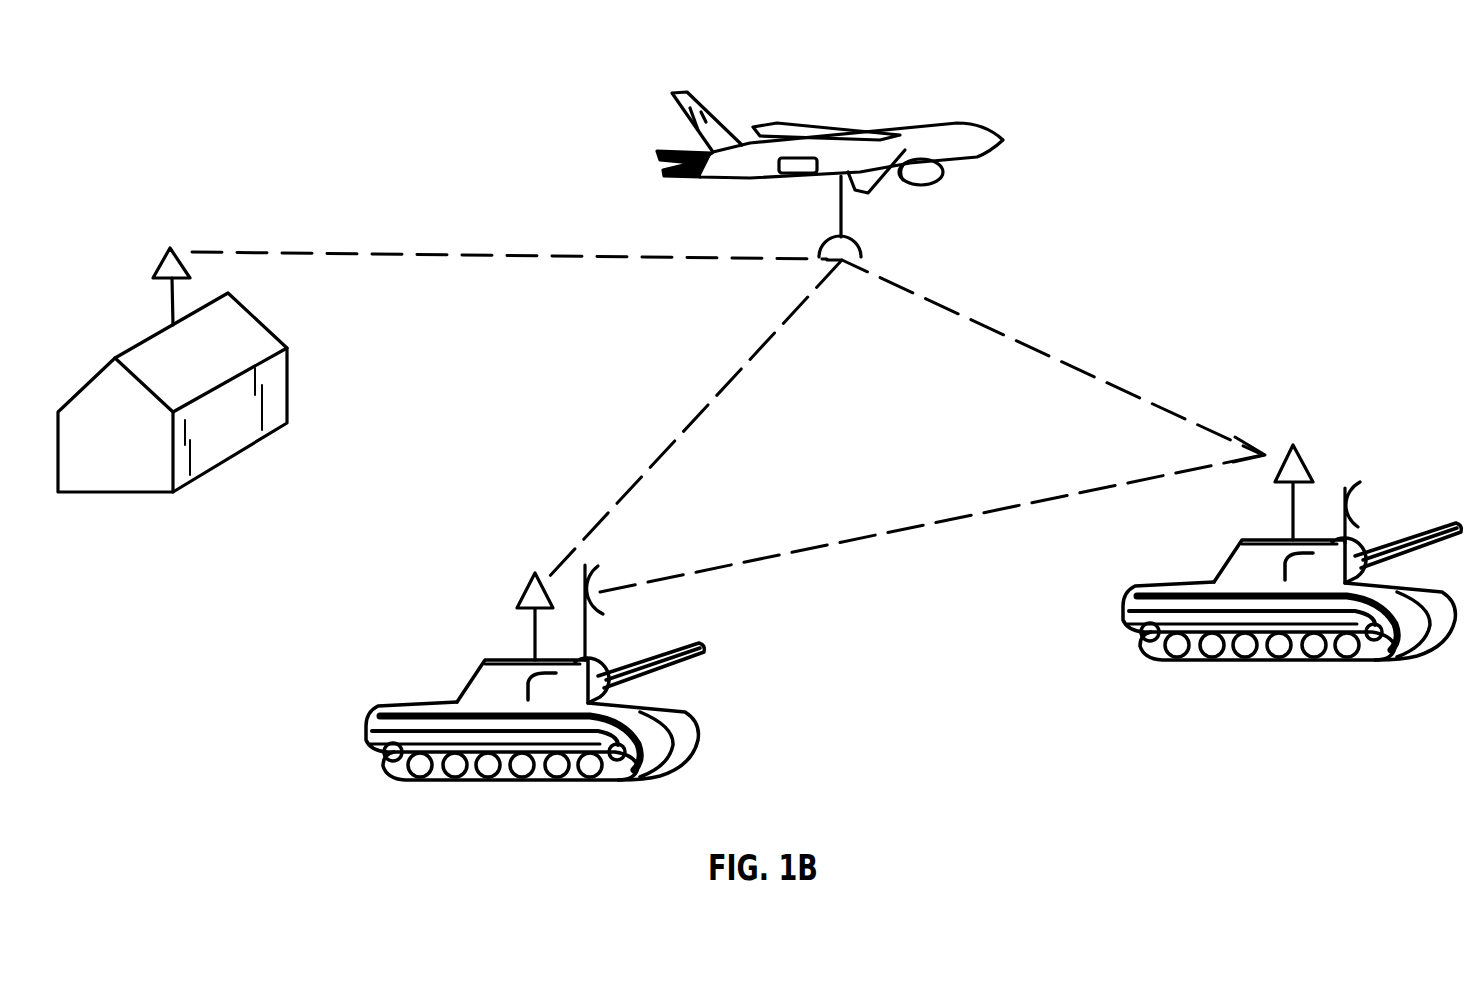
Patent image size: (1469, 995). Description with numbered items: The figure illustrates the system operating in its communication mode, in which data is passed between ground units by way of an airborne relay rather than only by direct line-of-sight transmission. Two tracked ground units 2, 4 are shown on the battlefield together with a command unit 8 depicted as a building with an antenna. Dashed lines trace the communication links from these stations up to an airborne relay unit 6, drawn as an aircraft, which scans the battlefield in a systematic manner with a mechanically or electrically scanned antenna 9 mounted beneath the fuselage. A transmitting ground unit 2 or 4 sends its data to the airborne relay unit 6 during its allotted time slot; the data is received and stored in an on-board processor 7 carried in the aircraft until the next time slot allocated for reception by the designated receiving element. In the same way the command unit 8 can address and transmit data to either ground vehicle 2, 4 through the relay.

The ground unit 2 is at (1323, 540).
The ground unit 4 is at (418, 700).
The airborne relay unit 6 is at (830, 149).
The on-board processor 7 is at (792, 174).
The command unit 8 is at (100, 370).
The scanned antenna 9 is at (862, 239).